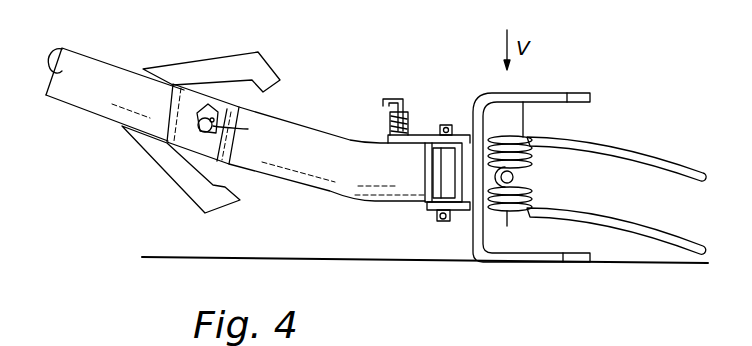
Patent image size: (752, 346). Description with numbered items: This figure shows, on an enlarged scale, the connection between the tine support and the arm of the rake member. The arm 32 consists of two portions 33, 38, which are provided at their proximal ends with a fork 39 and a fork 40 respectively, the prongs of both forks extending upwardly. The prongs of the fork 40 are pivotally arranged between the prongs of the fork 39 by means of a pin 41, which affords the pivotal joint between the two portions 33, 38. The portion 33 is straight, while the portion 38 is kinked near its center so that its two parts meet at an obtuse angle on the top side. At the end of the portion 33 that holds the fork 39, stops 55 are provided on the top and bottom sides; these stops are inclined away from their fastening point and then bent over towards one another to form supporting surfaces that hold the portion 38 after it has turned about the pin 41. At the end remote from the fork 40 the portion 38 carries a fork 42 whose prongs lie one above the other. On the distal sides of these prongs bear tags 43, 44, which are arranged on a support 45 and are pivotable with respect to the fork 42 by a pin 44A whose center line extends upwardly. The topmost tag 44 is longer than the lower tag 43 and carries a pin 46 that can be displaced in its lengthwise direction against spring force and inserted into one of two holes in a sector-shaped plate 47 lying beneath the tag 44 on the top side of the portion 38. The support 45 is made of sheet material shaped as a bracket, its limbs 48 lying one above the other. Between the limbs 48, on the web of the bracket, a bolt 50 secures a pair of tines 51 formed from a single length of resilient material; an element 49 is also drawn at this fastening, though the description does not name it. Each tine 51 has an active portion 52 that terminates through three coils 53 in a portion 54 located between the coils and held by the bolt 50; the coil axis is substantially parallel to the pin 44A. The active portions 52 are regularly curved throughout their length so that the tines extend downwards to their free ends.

The arm 32 is at (80, 121).
The portion 33 is at (82, 58).
The stops 55 is at (213, 60).
The fork 39 is at (190, 102).
The pin 41 is at (210, 110).
The fork 40 is at (256, 110).
The portion 38 is at (305, 178).
The pin 46 is at (403, 98).
The sector-shaped plate 47 is at (412, 145).
The tag 44 is at (428, 134).
The pin 44A is at (447, 124).
The fork 42 is at (427, 195).
The tag 43 is at (431, 210).
The portion 54 is at (492, 181).
The limbs 48 is at (553, 93).
The support 45 is at (529, 123).
The ball pivot 49 is at (518, 171).
The bolt 50 is at (521, 176).
The coils 53 is at (516, 213).
The tines 51 is at (652, 170).
The active portion 52 is at (647, 126).